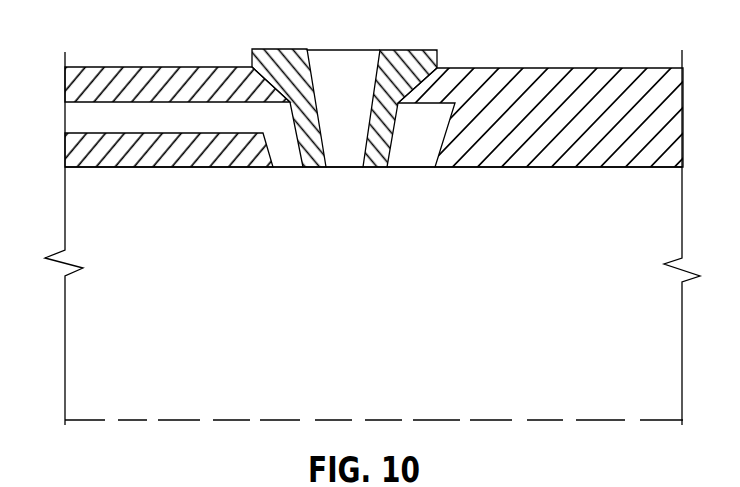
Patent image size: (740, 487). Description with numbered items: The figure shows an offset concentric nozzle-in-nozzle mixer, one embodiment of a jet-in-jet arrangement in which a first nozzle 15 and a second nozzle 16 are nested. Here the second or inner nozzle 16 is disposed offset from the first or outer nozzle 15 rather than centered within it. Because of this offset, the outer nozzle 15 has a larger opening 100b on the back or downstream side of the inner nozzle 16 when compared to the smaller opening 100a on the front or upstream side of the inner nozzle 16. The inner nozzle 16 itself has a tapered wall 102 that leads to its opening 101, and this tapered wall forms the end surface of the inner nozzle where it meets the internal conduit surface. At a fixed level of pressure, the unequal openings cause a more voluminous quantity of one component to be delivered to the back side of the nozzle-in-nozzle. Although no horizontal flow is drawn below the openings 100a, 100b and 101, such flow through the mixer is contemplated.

The first nozzle 15 is at (239, 168).
The second nozzle 16 is at (329, 51).
The opening 100a is at (285, 170).
The opening 100b is at (417, 170).
The first opening 101 is at (340, 170).
The tapered wall 102 is at (368, 170).